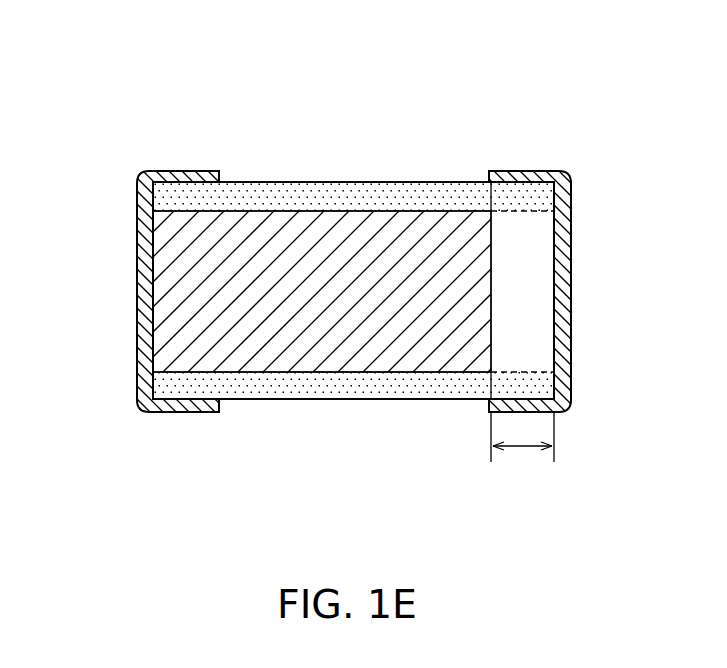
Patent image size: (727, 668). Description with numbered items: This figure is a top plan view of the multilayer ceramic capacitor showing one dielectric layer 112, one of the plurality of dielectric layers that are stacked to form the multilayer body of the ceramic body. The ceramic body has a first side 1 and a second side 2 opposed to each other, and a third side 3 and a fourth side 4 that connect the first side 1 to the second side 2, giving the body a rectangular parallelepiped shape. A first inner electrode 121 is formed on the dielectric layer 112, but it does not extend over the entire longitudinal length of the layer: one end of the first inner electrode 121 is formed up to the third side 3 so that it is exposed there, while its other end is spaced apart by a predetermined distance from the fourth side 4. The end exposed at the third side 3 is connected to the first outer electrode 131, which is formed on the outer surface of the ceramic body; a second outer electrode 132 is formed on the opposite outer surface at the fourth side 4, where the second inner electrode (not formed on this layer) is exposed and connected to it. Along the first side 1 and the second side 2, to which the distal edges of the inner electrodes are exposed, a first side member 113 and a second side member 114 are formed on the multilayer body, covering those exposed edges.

The first side 1 is at (382, 145).
The second side 2 is at (386, 431).
The third side 3 is at (119, 324).
The fourth side 4 is at (593, 278).
The dielectric layer 112 is at (540, 330).
The first side member 113 is at (160, 198).
The second side member 114 is at (160, 385).
The first inner electrode 121 is at (322, 358).
The first outer electrode 131 is at (182, 172).
The second outer electrode 132 is at (530, 172).